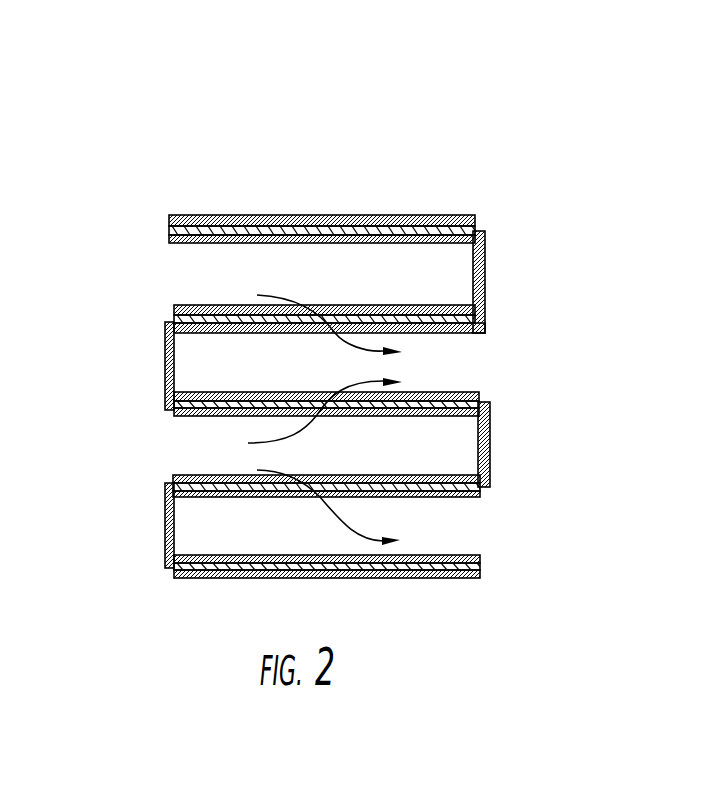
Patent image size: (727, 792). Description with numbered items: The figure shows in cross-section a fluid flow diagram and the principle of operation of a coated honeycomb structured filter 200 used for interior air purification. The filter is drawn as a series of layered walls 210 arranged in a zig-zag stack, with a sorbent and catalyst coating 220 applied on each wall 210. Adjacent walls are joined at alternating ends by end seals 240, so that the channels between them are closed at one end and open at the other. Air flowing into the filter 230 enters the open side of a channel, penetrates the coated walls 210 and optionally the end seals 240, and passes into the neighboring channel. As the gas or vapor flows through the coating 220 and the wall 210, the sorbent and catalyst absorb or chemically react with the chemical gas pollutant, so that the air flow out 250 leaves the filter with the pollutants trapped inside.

The honeycomb structured filter 200 is at (513, 85).
The wall 210 is at (173, 318).
The coating 220 is at (476, 222).
The air flowing into the filter 230 is at (171, 452).
The end seals 240 is at (486, 275).
The air flow out 250 is at (483, 365).